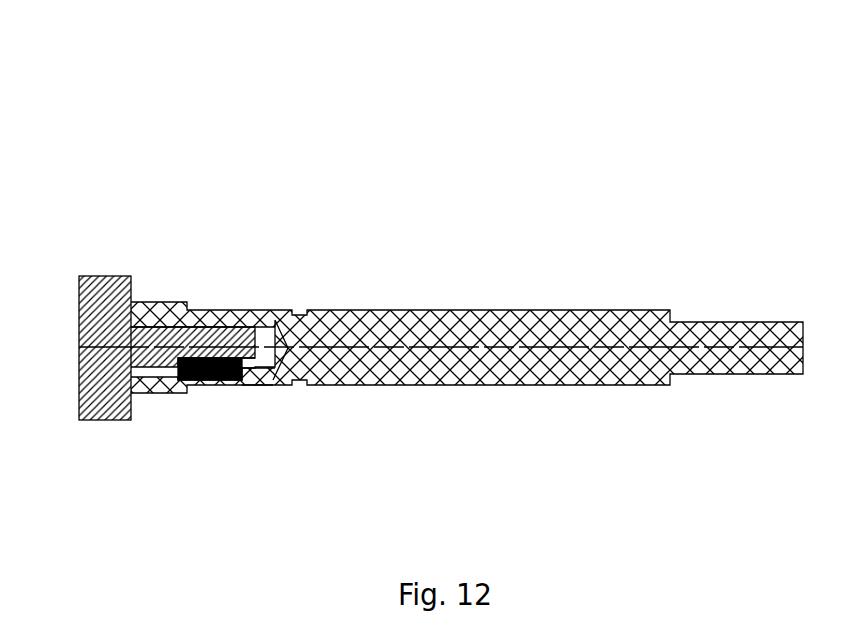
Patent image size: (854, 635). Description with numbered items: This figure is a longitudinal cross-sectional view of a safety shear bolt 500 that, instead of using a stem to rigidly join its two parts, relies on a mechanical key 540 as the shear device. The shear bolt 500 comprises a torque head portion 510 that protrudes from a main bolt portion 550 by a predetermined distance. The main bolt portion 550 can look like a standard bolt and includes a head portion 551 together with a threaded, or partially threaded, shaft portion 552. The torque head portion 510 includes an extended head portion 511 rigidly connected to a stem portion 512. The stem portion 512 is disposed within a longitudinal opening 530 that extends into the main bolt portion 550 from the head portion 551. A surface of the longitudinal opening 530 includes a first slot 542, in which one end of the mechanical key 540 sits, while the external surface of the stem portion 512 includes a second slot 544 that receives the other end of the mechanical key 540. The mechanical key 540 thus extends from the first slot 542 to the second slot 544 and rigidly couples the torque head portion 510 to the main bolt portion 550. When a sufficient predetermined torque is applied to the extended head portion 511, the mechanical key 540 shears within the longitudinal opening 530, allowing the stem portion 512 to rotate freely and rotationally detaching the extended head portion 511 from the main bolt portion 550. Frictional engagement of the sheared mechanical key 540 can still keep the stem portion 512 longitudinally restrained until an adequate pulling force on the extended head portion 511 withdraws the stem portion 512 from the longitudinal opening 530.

The safety shear bolt 500 is at (110, 47).
The torque head portion 510 is at (248, 232).
The extended head portion 511 is at (101, 421).
The stem portion 512 is at (187, 332).
The longitudinal opening 530 is at (269, 322).
The mechanical key 540 is at (174, 384).
The first slot 542 is at (262, 376).
The second slot 544 is at (222, 352).
The main bolt portion 550 is at (807, 232).
The head portion 551 is at (153, 300).
The shaft portion 552 is at (445, 309).